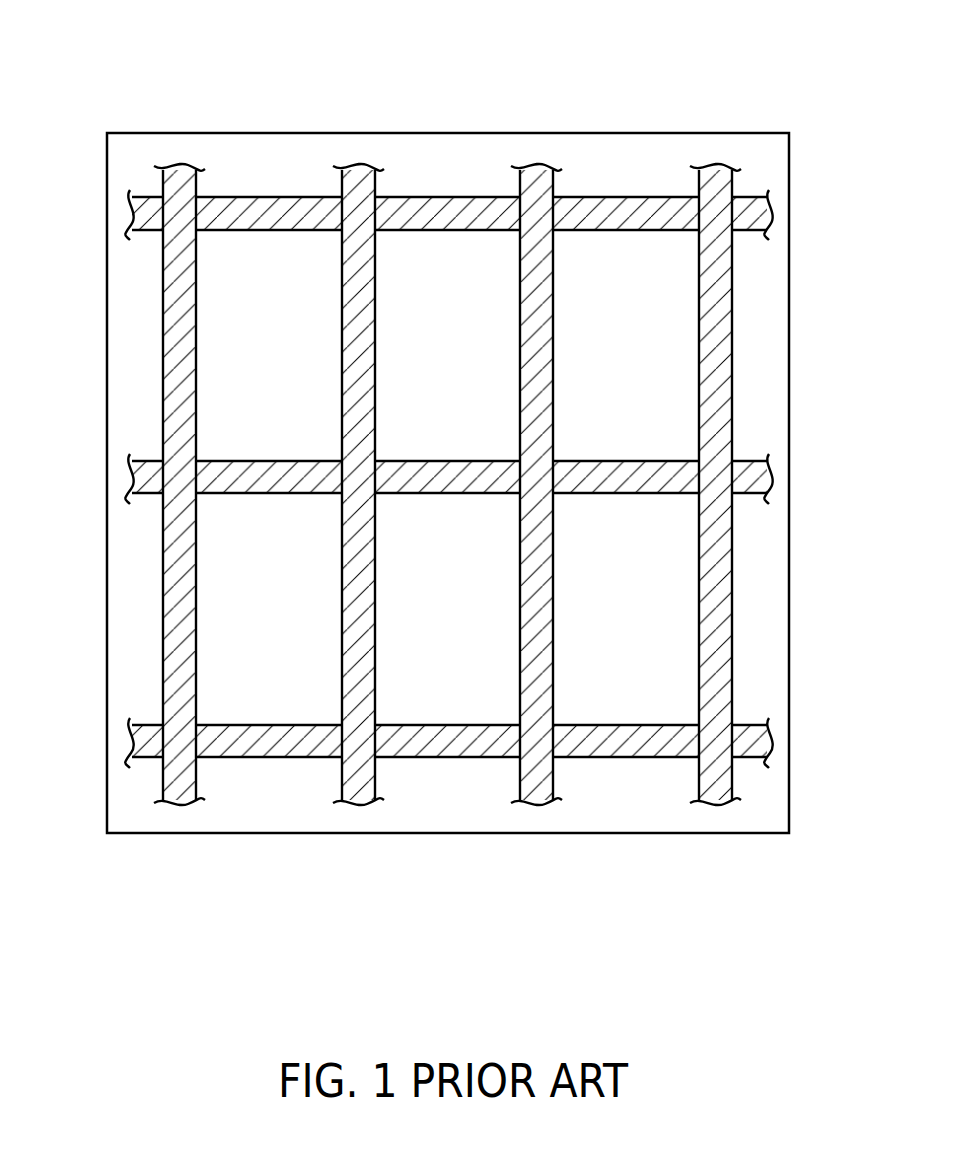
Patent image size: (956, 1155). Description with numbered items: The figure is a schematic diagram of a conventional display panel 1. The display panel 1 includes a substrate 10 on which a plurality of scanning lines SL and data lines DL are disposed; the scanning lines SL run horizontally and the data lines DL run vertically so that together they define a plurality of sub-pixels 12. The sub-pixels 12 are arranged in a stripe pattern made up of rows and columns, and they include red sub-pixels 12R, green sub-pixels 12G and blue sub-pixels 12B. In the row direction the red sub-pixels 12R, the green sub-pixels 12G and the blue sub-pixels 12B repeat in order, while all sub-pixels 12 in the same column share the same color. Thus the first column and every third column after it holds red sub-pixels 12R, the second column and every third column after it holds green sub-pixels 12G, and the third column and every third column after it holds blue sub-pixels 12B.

The conventional display panel 1 is at (697, 52).
The substrate 10 is at (203, 836).
The scanning lines SL is at (255, 212).
The data lines DL is at (177, 284).
The sub-pixels 12 is at (447, 477).
The red sub-pixels 12R is at (271, 470).
The green sub-pixels 12G is at (451, 470).
The blue sub-pixels 12B is at (629, 470).